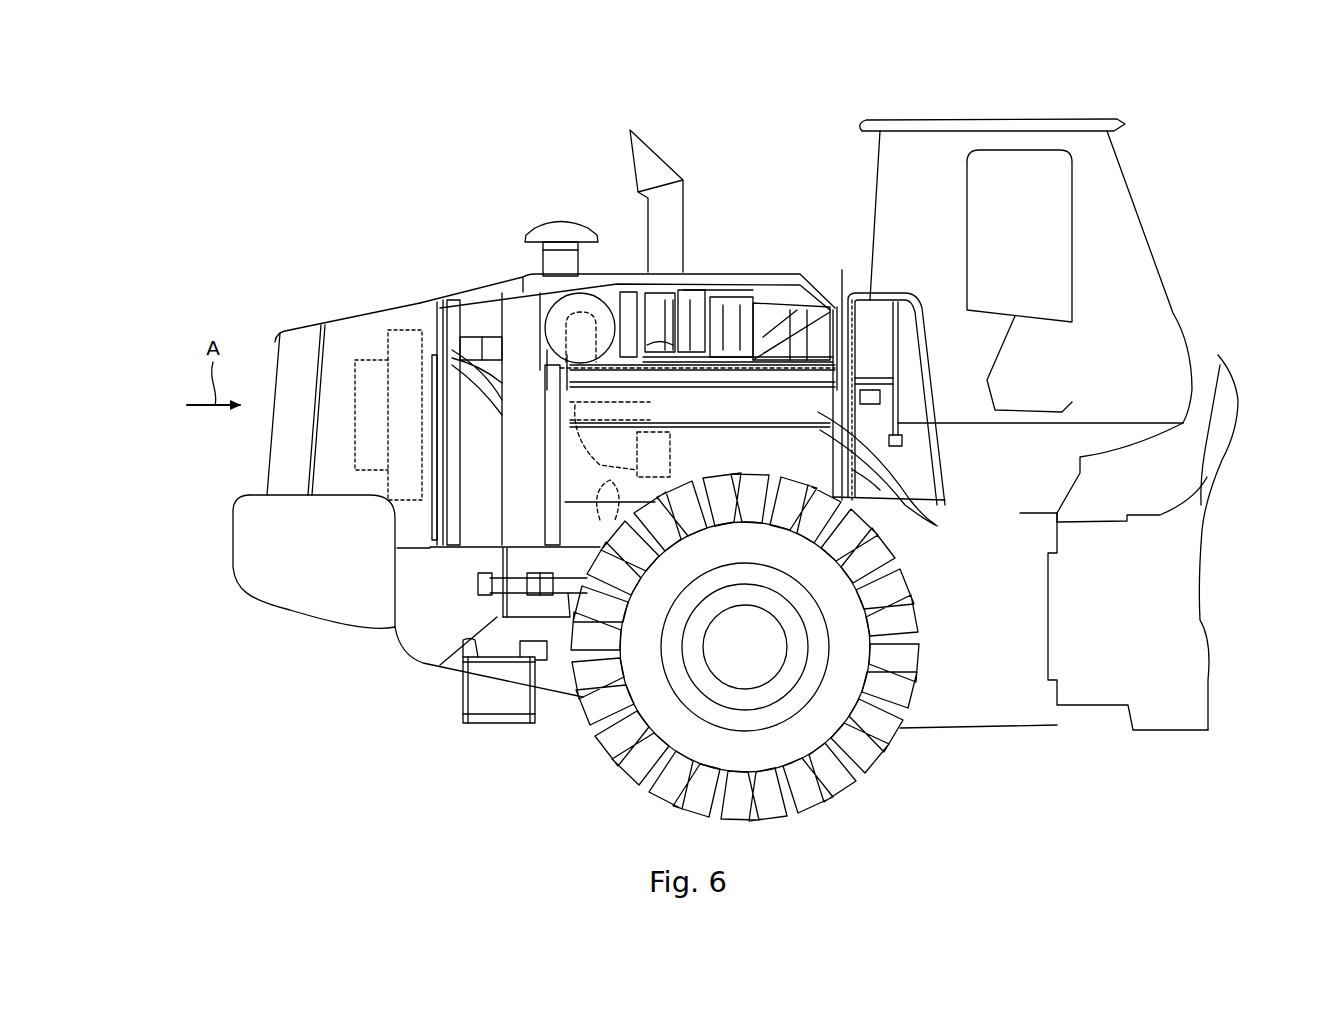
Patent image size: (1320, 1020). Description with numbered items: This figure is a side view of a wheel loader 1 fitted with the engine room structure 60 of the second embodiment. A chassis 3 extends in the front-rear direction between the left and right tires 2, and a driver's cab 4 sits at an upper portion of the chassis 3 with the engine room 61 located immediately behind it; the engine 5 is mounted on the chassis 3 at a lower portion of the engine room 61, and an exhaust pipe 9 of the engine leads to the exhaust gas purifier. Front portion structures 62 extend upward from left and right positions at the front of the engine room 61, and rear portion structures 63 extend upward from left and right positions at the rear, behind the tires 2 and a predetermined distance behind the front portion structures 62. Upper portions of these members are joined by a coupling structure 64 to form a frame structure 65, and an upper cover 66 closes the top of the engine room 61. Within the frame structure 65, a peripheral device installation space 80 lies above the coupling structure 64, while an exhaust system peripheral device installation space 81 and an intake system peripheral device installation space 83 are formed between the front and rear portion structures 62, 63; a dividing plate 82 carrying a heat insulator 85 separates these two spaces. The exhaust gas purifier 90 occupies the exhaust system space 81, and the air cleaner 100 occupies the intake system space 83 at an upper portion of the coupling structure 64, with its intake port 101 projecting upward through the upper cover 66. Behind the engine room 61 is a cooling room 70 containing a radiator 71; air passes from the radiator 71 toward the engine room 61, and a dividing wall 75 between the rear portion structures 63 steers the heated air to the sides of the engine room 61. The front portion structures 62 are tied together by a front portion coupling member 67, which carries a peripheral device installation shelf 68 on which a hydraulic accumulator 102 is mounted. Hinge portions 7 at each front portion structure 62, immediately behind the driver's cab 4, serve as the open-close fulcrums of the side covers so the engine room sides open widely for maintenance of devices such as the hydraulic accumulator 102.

The wheel loader 1 is at (1222, 140).
The tires 2 is at (668, 708).
The chassis 3 is at (922, 705).
The driver's cab 4 is at (1022, 170).
The engine 5 is at (583, 478).
The hinge portions 7 is at (803, 460).
The exhaust pipe 9 is at (730, 470).
The engine room structure 60 is at (553, 468).
The engine room 61 is at (613, 512).
The front portion structures 62 is at (845, 318).
The rear portion structures 63 is at (553, 383).
The coupling structure 64 is at (713, 362).
The frame structure 65 is at (690, 106).
The upper cover 66 is at (532, 279).
The front portion coupling member 67 is at (873, 477).
The peripheral device installation shelf 68 is at (860, 403).
The cooling room 70 is at (345, 470).
The radiator 71 is at (407, 340).
The dividing wall 75 is at (505, 443).
The peripheral device installation space 80 is at (762, 297).
The exhaust system peripheral device installation space 81 is at (787, 300).
The dividing plate 82 is at (590, 314).
The intake system peripheral device installation space 83 is at (553, 315).
The heat insulator 85 is at (622, 318).
The exhaust gas purifier 90 is at (727, 357).
The air cleaner 100 is at (547, 352).
The intake port 101 is at (553, 225).
The hydraulic accumulator 102 is at (880, 393).